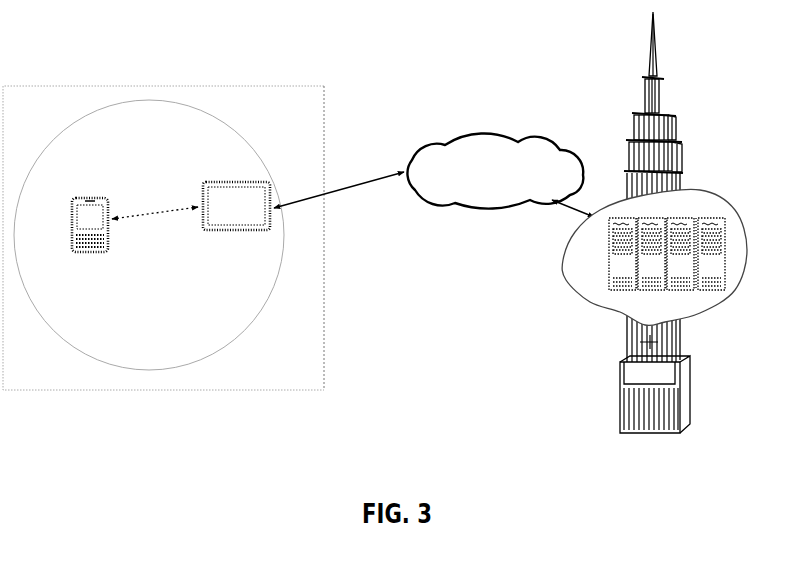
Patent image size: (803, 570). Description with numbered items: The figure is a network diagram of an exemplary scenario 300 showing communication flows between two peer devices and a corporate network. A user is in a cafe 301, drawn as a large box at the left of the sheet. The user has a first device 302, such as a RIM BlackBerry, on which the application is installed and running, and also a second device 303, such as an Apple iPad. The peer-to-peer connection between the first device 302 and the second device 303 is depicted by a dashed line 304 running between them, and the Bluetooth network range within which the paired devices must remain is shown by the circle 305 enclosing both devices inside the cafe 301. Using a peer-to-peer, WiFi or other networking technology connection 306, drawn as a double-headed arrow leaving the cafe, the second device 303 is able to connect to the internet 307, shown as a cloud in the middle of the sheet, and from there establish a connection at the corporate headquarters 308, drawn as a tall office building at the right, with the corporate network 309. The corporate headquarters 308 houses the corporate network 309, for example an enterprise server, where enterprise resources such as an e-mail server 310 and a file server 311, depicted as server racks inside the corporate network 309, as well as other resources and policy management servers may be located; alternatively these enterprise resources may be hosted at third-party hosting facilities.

The scenario 300 is at (723, 28).
The cafe 301 is at (304, 85).
The first device 302 is at (107, 198).
The second device 303 is at (237, 181).
The dashed line 304 is at (142, 212).
The circle 305 is at (237, 130).
The connection 306 is at (330, 195).
The internet 307 is at (523, 141).
The corporate headquarters 308 is at (675, 115).
The corporate network 309 is at (705, 190).
The e-mail server 310 is at (630, 218).
The file server 311 is at (677, 218).